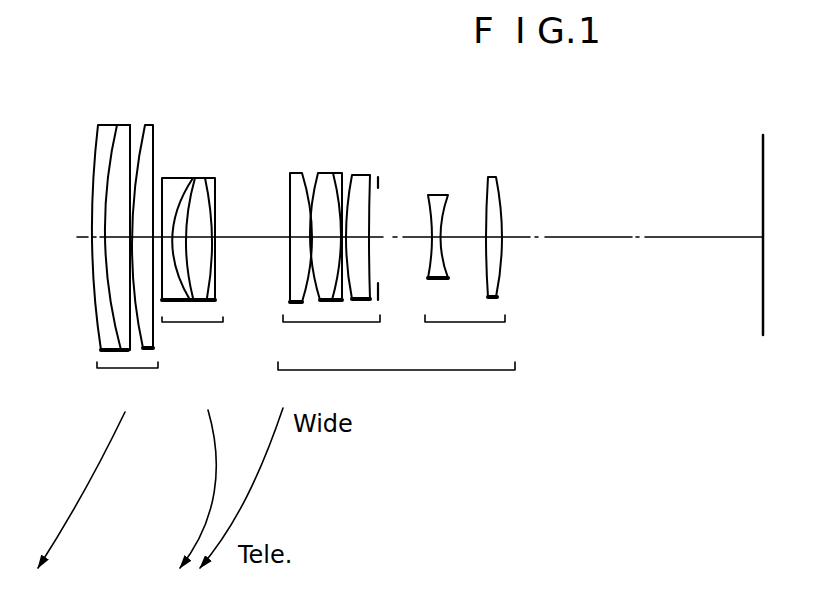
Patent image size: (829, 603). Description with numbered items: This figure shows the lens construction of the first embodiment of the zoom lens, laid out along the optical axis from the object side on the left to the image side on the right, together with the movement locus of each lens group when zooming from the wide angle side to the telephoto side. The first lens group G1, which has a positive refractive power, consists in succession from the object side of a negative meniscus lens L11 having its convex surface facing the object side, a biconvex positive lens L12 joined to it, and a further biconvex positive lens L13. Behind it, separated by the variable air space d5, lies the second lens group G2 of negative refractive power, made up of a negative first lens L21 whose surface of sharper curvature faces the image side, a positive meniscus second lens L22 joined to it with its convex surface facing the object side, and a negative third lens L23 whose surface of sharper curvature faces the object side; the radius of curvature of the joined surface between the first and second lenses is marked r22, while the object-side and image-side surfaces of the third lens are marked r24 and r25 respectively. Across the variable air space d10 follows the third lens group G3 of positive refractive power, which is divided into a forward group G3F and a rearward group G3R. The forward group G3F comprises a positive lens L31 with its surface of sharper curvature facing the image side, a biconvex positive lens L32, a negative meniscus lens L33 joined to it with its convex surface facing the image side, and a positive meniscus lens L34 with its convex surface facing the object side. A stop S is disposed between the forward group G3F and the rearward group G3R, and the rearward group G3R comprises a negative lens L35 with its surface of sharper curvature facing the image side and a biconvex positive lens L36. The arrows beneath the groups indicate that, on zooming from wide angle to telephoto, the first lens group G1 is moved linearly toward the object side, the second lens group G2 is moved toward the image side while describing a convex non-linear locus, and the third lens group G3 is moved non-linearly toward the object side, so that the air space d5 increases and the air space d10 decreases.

The negative meniscus lens L11 is at (102, 135).
The biconvex positive lens L12 is at (123, 137).
The biconvex positive lens L13 is at (148, 132).
The negative first lens L21 is at (173, 182).
The positive meniscus second lens L22 is at (188, 178).
The negative third lens L23 is at (215, 179).
The positive lens L31 is at (292, 173).
The biconvex positive lens L32 is at (318, 187).
The negative meniscus lens L33 is at (337, 177).
The positive meniscus lens L34 is at (358, 177).
The negative lens L35 is at (437, 195).
The biconvex positive lens L36 is at (492, 177).
The radius of curvature of the joined surface r22 is at (173, 212).
The radius of curvature of the object-side surface of the third lens r24 is at (204, 225).
The radius of curvature of the image-side surface of the third lens r25 is at (217, 281).
The variable air space d5 is at (158, 242).
The variable air space d10 is at (247, 238).
The stop S is at (382, 183).
The first lens group G1 is at (127, 383).
The second lens group G2 is at (192, 337).
The third lens group G3 is at (396, 383).
The forward group G3F is at (331, 337).
The rearward group G3R is at (465, 337).